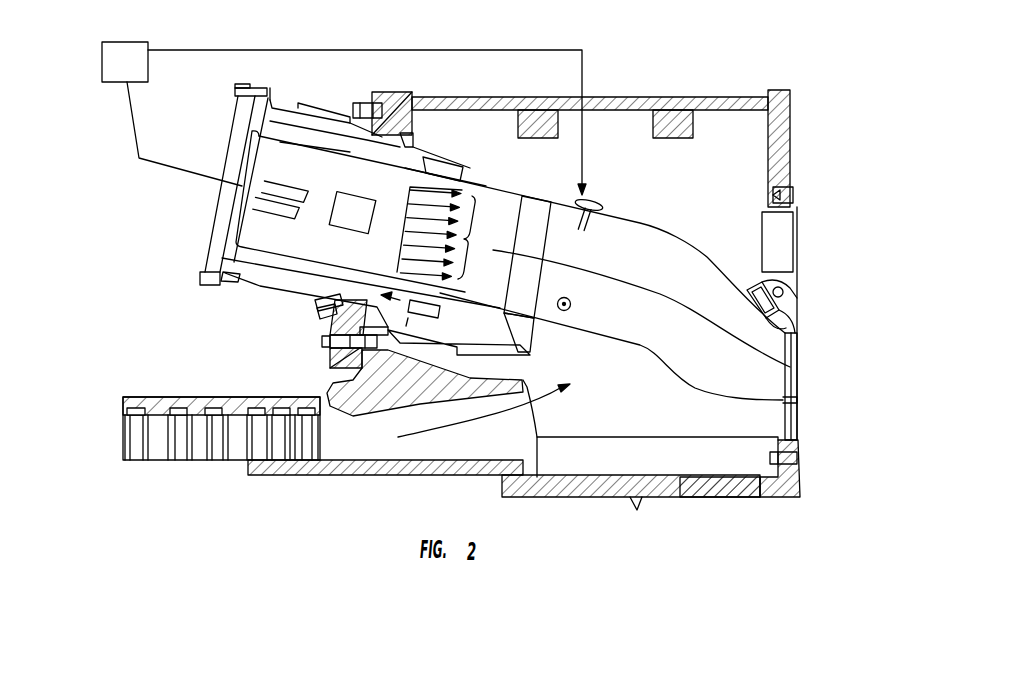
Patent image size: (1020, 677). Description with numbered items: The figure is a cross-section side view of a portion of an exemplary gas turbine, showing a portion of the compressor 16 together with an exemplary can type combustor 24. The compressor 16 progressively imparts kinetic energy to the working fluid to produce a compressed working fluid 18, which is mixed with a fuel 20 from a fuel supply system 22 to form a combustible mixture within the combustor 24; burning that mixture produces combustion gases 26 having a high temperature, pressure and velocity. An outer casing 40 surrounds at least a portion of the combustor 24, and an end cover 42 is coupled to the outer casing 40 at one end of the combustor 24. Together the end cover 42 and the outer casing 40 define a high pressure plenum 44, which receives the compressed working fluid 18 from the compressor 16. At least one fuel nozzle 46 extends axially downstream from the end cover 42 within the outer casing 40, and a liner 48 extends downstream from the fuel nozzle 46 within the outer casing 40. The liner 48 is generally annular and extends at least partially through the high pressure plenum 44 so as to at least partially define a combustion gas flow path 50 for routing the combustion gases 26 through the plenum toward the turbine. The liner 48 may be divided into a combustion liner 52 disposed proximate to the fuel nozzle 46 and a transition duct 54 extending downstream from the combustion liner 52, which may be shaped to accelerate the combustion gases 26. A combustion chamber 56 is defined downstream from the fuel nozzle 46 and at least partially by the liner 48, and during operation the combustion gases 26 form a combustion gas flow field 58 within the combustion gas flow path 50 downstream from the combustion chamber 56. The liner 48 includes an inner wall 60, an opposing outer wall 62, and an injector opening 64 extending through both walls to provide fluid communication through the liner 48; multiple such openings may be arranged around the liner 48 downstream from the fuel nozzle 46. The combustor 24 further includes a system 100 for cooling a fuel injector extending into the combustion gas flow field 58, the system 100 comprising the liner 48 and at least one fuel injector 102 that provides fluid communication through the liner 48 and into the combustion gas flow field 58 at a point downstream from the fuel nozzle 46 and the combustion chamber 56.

The compressor 16 is at (218, 396).
The compressed working fluid 18 is at (283, 114).
The fuel 20 is at (403, 50).
The fuel supply system 22 is at (136, 74).
The combustor 24 is at (690, 18).
The combustion gases 26 is at (405, 219).
The outer casing 40 is at (683, 97).
The end cover 42 is at (216, 237).
The high pressure plenum 44 is at (688, 175).
The fuel nozzle 46 is at (287, 190).
The liner 48 is at (498, 167).
The combustion gas flow path 50 is at (513, 258).
The combustion liner 52 is at (484, 170).
The transition duct 54 is at (733, 228).
The combustion chamber 56 is at (352, 213).
The combustion gas flow field 58 is at (471, 256).
The inner wall 60 is at (641, 347).
The outer wall 62 is at (690, 380).
The injector opening 64 is at (592, 218).
The system 100 is at (612, 191).
The fuel injector 102 is at (589, 198).